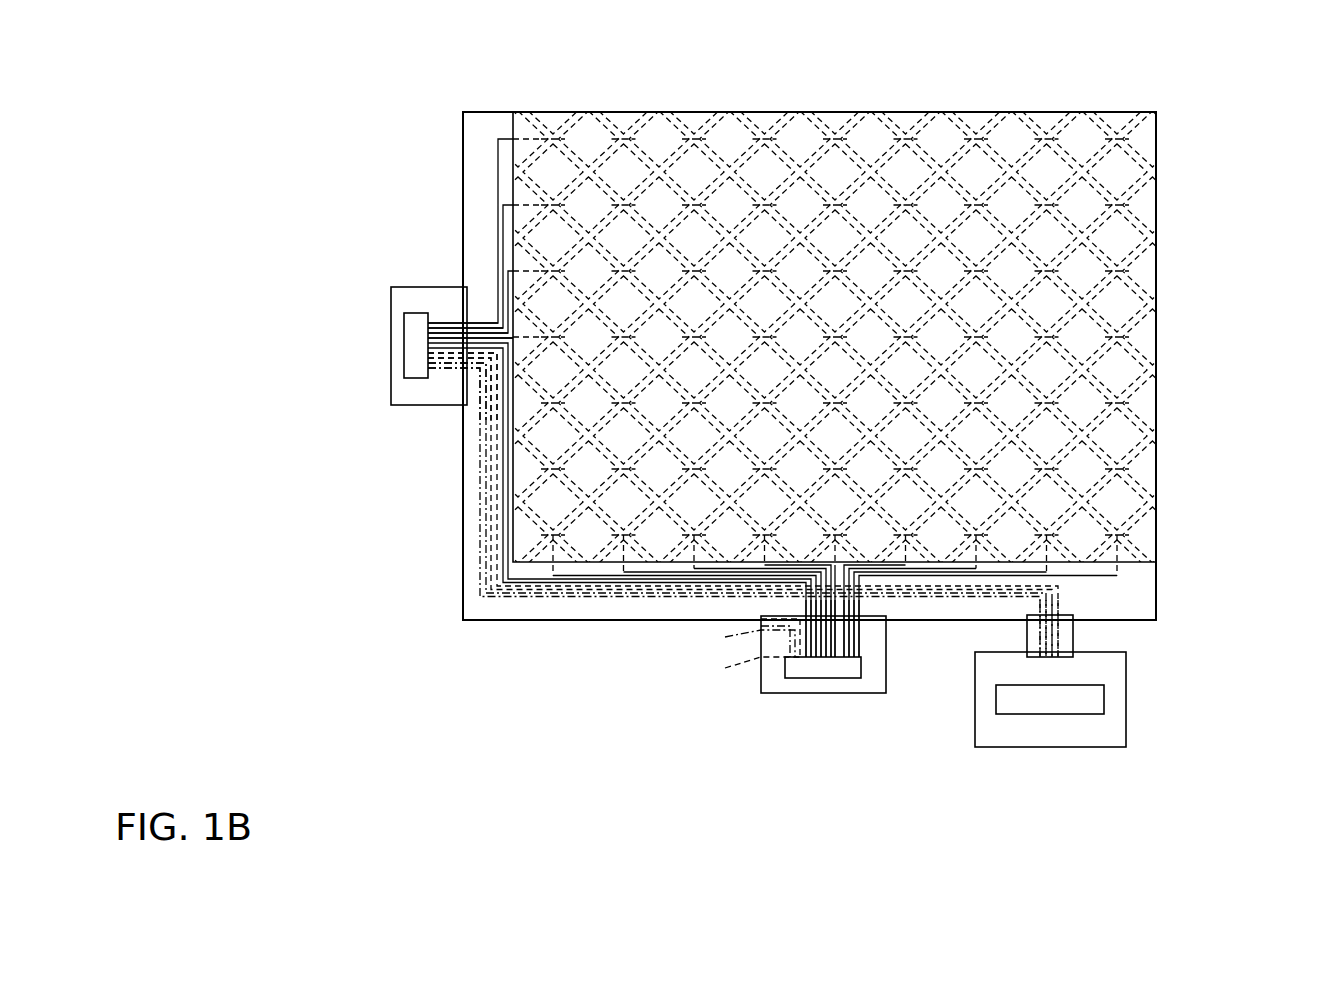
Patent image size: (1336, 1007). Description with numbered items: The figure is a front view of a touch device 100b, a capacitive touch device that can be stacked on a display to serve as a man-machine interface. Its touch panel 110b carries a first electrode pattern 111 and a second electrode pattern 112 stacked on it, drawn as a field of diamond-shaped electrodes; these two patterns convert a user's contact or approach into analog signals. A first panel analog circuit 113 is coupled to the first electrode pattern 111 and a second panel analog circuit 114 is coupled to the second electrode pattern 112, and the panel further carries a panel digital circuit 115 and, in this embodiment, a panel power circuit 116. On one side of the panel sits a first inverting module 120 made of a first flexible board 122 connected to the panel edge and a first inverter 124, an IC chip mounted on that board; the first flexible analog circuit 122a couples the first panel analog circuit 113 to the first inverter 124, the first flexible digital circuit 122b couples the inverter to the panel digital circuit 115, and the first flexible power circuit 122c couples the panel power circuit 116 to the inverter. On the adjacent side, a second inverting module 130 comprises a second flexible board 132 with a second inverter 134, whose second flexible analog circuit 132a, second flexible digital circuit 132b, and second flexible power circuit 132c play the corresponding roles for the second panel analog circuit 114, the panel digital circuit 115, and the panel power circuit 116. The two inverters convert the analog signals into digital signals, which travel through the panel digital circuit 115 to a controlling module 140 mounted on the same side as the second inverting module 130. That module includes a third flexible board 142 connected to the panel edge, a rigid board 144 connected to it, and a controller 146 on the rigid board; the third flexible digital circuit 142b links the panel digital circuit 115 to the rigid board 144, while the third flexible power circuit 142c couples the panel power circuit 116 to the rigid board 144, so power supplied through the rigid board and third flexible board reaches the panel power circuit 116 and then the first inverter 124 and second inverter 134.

The touch device 100b is at (1147, 95).
The touch panel 110b is at (1157, 202).
The first electrode pattern 111 is at (575, 132).
The second electrode pattern 112 is at (1135, 510).
The first panel analog circuit 113 is at (505, 133).
The second panel analog circuit 114 is at (1124, 573).
The panel digital circuit 115 is at (521, 597).
The panel power circuit 116 is at (595, 597).
The first inverting module 120 is at (310, 364).
The first flexible board 122 is at (391, 297).
The first flexible analog circuit 122a is at (447, 316).
The first flexible digital circuit 122b is at (446, 372).
The first flexible power circuit 122c is at (452, 380).
The first inverter 124 is at (404, 345).
The second inverting module 130 is at (648, 709).
The second flexible board 132 is at (765, 681).
The second flexible analog circuit 132a is at (858, 636).
The second flexible digital circuit 132b is at (740, 651).
The second flexible power circuit 132c is at (737, 640).
The second inverter 134 is at (803, 672).
The controlling module 140 is at (1066, 729).
The third flexible board 142 is at (1073, 640).
The third flexible digital circuit 142b is at (967, 672).
The third flexible power circuit 142c is at (979, 648).
The rigid board 144 is at (1027, 728).
The controller 146 is at (1007, 700).